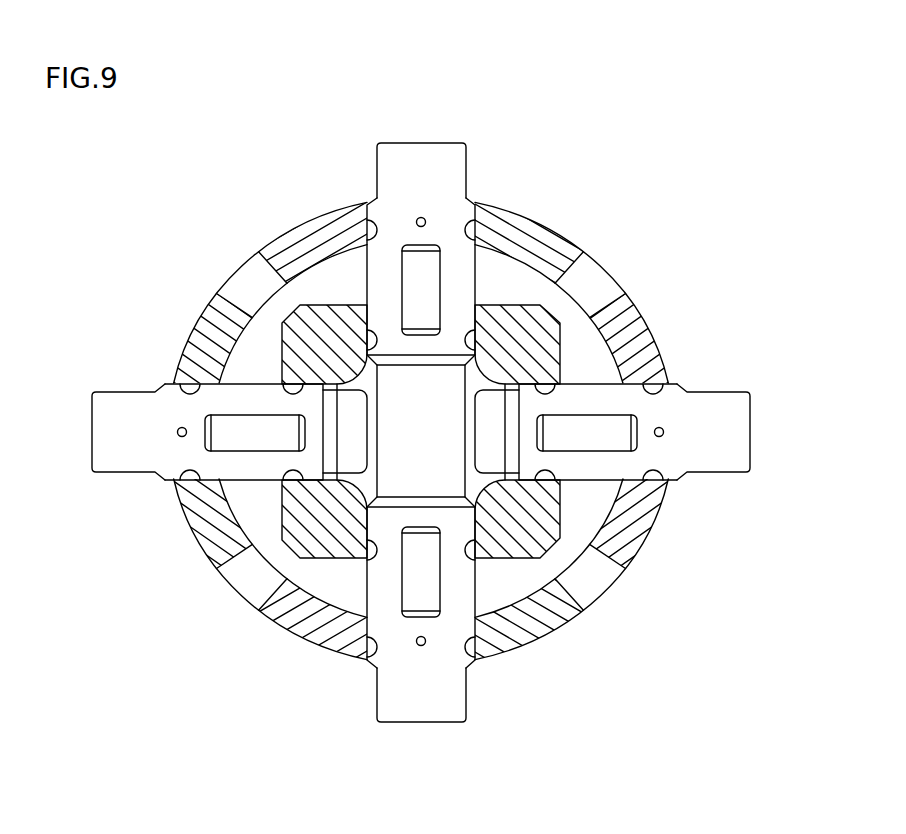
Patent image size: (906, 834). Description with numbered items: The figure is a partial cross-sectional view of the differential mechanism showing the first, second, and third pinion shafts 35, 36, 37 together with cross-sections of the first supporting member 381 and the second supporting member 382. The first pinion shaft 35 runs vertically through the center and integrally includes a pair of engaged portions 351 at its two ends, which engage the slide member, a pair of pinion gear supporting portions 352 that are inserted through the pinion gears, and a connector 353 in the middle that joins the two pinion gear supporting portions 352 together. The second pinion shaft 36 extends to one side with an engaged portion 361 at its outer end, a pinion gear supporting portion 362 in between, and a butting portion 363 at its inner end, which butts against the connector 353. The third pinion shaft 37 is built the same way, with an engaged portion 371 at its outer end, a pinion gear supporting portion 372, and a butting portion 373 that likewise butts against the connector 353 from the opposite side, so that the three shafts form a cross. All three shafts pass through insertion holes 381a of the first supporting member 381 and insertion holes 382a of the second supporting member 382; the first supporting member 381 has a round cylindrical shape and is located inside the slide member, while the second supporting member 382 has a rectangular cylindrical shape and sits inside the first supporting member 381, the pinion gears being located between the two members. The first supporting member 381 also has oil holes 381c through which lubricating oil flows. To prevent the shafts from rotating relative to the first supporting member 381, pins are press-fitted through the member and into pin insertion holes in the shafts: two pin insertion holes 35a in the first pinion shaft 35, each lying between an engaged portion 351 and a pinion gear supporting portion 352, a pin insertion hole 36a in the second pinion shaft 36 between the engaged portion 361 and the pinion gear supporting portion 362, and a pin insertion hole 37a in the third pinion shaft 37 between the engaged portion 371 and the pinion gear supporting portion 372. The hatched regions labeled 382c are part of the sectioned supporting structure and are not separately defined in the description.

The first pinion shaft 35 is at (373, 123).
The engaged portion 351 is at (432, 150).
The pinion gear supporting portion 352 is at (382, 273).
The connector 353 is at (402, 427).
The pin insertion hole 35a is at (427, 219).
The second pinion shaft 36 is at (116, 379).
The engaged portion 361 is at (102, 443).
The pinion gear supporting portion 362 is at (245, 472).
The butting portion 363 is at (350, 463).
The pin insertion hole 36a is at (177, 430).
The third pinion shaft 37 is at (747, 381).
The engaged portion 371 is at (748, 452).
The pinion gear supporting portion 372 is at (597, 470).
The butting portion 373 is at (548, 492).
The pin insertion hole 37a is at (662, 436).
The first supporting member 381 is at (519, 212).
The insertion hole 381a is at (368, 226).
The oil hole 381c is at (597, 277).
The second supporting member 382 is at (549, 281).
The insertion hole 382a is at (562, 385).
The arc-shaped piece 382c is at (551, 593).